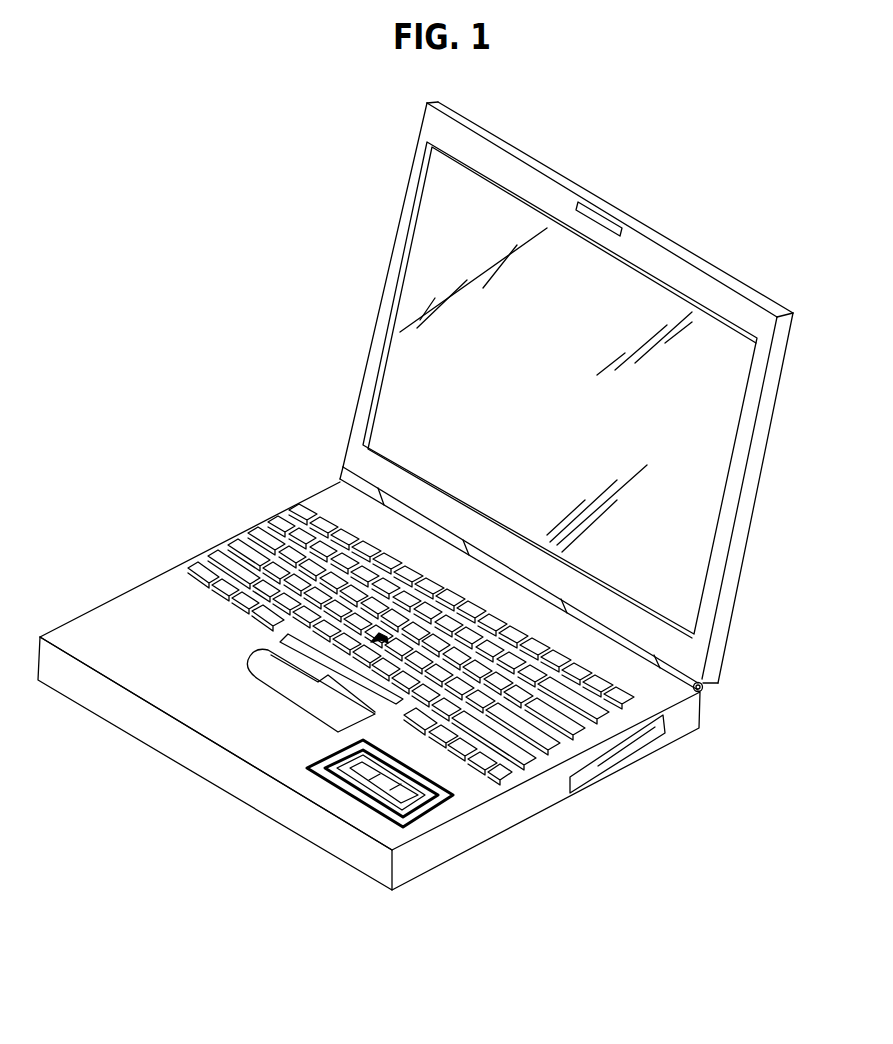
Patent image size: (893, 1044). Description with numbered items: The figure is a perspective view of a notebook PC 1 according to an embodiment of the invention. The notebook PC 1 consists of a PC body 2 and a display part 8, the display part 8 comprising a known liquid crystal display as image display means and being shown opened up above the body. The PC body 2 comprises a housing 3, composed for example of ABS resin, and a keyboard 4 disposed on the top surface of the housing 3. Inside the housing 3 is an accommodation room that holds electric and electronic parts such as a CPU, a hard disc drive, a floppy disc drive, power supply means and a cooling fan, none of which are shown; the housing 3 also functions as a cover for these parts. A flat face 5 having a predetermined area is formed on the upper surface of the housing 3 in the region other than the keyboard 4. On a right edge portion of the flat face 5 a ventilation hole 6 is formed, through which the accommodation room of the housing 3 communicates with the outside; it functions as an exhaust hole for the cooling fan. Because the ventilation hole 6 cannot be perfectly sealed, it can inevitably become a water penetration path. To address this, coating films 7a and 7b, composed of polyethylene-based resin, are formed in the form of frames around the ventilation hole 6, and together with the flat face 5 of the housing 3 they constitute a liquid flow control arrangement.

The notebook PC 1 is at (327, 285).
The PC body 2 is at (248, 502).
The housing 3 is at (110, 600).
The keyboard 4 is at (250, 553).
The flat face 5 is at (148, 687).
The ventilation hole 6 is at (427, 803).
The coating film 7a is at (380, 803).
The coating film 7b is at (335, 785).
The display part 8 is at (352, 347).